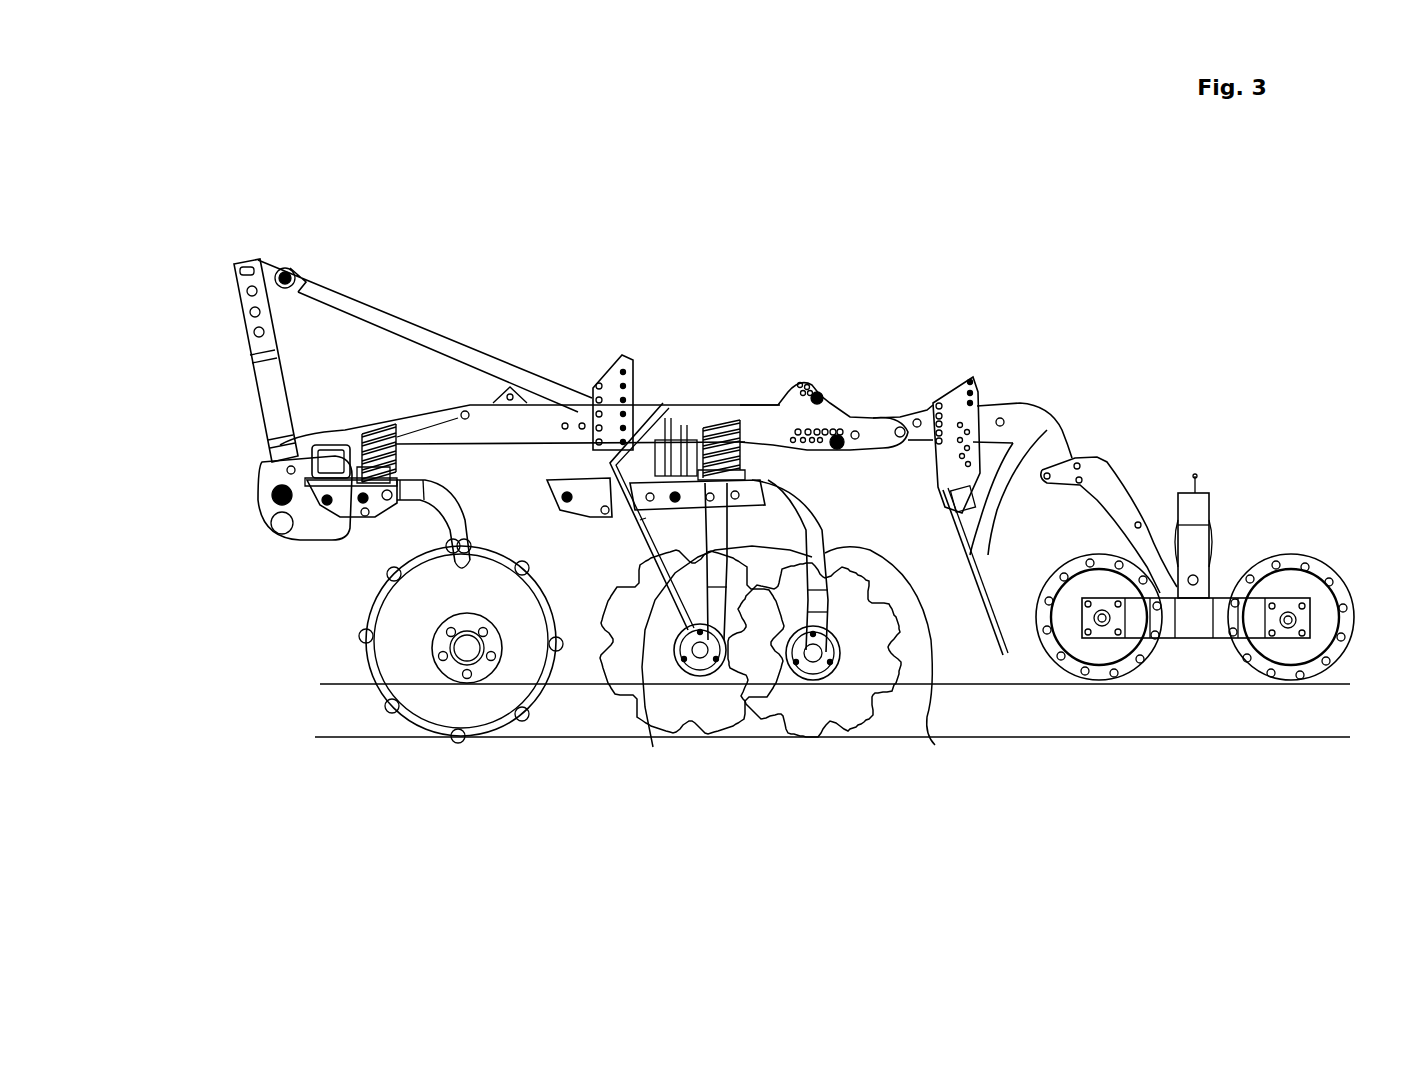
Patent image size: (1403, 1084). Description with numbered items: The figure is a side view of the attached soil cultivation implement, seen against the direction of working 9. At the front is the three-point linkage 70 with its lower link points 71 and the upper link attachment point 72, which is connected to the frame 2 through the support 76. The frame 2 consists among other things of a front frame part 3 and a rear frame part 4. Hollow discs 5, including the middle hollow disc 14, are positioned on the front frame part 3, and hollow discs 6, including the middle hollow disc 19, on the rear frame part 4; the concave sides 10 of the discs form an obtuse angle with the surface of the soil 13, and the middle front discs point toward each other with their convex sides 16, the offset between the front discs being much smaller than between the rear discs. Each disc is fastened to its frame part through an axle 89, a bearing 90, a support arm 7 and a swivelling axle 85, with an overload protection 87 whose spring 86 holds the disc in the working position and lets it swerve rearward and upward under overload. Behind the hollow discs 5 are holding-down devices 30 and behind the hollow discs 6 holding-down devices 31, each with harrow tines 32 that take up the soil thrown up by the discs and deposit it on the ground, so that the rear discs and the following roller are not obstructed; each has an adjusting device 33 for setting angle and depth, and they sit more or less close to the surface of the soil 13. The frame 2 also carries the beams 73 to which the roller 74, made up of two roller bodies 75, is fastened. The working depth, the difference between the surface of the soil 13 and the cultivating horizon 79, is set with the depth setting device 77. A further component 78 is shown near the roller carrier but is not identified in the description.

The frame 2 is at (538, 425).
The front frame part 3 is at (313, 432).
The rear frame part 4 is at (690, 455).
The hollow discs 5 is at (461, 681).
The hollow discs 6 is at (868, 700).
The support arms 7 is at (365, 530).
The direction of working 9 is at (185, 563).
The concave sides 10 is at (410, 700).
The surface of the soil 13 is at (340, 684).
The hollow disc 14 is at (568, 700).
The convex sides 16 is at (605, 700).
The hollow disc 19 is at (722, 713).
The holding-down devices 30 is at (655, 455).
The holding-down devices 31 is at (1047, 400).
The harrow tines 32 is at (1037, 470).
The adjusting device 33 is at (948, 398).
The three-point linkage 70 is at (368, 349).
The lower link points 71 is at (282, 495).
The upper link attachment point 72 is at (252, 313).
The beams 73 is at (1010, 418).
The roller 74 is at (1242, 515).
The roller bodies 75 is at (1100, 652).
The support 76 is at (430, 342).
The depth setting device 77 is at (829, 420).
The vertical post 78 is at (1190, 578).
The cultivating horizon 79 is at (330, 737).
The swivelling axle 85 is at (362, 432).
The spring 86 is at (571, 370).
The overload protection 87 is at (721, 450).
The axles 89 is at (813, 710).
The bearings 90 is at (797, 700).